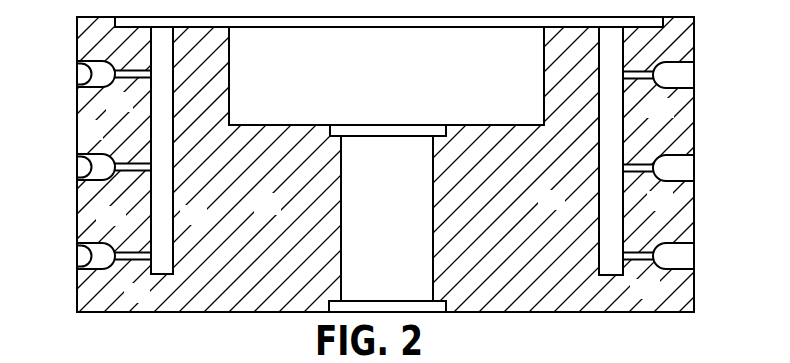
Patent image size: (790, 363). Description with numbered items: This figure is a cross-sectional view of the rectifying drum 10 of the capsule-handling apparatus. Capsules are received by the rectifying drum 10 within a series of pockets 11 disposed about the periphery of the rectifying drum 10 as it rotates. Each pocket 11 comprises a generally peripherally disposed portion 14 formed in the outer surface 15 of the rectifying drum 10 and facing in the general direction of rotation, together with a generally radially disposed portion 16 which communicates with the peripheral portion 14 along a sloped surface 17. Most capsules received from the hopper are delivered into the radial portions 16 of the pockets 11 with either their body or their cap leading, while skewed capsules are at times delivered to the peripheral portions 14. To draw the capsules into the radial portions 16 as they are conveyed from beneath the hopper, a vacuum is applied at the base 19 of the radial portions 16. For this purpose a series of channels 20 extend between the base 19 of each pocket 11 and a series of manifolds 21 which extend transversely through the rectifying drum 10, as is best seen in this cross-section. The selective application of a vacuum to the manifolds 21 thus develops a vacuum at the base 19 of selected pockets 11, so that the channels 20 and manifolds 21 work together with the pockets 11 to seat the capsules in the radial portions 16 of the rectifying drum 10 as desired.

The rectifying drum 10 is at (257, 212).
The pocket 11 is at (72, 172).
The peripherally disposed portion 14 is at (82, 75).
The outer surface 15 is at (77, 46).
The radially disposed portion 16 is at (108, 87).
The sloped surface 17 is at (98, 88).
The base 19 is at (110, 269).
The channel 20 is at (133, 250).
The manifold 21 is at (163, 238).